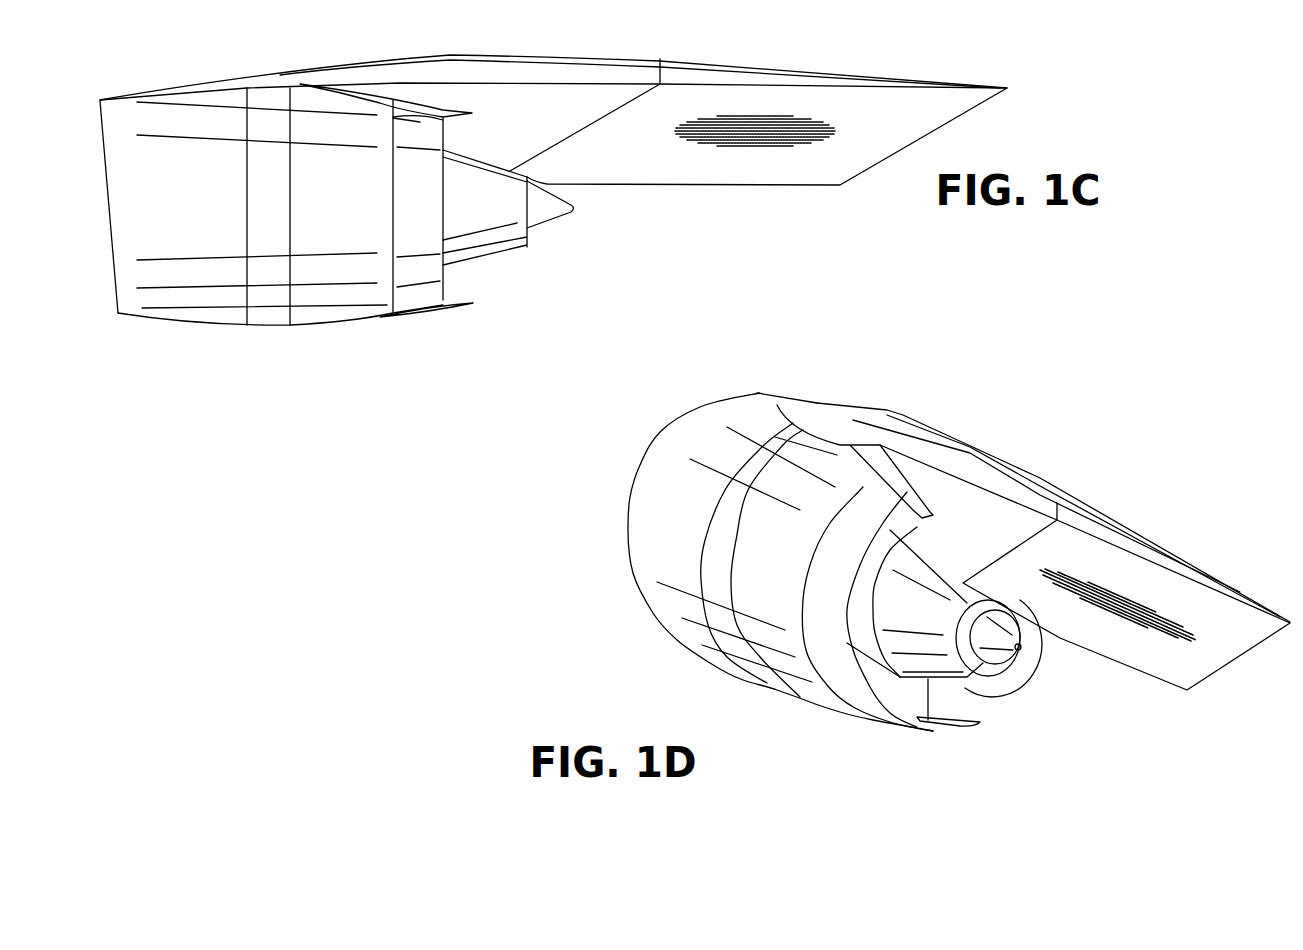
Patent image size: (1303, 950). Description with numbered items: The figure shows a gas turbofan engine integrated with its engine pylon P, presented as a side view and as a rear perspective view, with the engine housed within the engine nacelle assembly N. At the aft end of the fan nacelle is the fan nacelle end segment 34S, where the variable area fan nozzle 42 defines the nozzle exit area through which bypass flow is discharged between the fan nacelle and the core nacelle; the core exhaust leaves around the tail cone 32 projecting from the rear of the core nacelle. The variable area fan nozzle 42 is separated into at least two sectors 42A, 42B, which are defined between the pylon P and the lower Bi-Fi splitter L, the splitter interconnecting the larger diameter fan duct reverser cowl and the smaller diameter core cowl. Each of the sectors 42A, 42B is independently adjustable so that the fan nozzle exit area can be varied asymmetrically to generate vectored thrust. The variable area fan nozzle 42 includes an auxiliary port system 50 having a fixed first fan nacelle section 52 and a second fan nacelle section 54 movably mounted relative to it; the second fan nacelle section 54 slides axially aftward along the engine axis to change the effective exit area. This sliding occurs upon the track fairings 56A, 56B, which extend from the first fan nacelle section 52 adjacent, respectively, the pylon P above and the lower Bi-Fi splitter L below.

In FIG. 1C, the engine nacelle assembly N is at (207, 355).
In FIG. 1D, the engine nacelle assembly N is at (666, 664).
In FIG. 1C, the engine pylon P is at (727, 95).
In FIG. 1D, the engine pylon P is at (1107, 537).
In FIG. 1C, the tail cone 32 is at (556, 212).
In FIG. 1D, the tail cone 32 is at (1025, 650).
In FIG. 1C, the fan nacelle end segment 34S is at (455, 278).
In FIG. 1C, the variable area fan nozzle 42 is at (413, 353).
In FIG. 1D, the first sector of variable area fan nozzle 42A is at (838, 673).
In FIG. 1D, the second sector of variable area fan nozzle 42B is at (983, 689).
In FIG. 1C, the auxiliary port system 50 is at (400, 86).
In FIG. 1C, the first fan nacelle section 52 is at (359, 302).
In FIG. 1C, the second fan nacelle section 54 is at (427, 305).
In FIG. 1C, the track fairing 56A is at (443, 112).
In FIG. 1D, the track fairing 56A is at (902, 492).
In FIG. 1C, the track fairing 56B is at (450, 311).
In FIG. 1D, the track fairing 56B is at (960, 725).
In FIG. 1D, the lower Bi-Fi splitter L is at (903, 693).